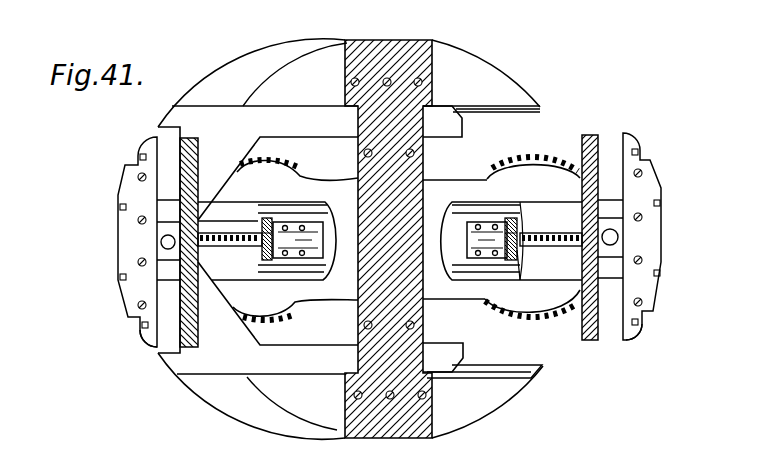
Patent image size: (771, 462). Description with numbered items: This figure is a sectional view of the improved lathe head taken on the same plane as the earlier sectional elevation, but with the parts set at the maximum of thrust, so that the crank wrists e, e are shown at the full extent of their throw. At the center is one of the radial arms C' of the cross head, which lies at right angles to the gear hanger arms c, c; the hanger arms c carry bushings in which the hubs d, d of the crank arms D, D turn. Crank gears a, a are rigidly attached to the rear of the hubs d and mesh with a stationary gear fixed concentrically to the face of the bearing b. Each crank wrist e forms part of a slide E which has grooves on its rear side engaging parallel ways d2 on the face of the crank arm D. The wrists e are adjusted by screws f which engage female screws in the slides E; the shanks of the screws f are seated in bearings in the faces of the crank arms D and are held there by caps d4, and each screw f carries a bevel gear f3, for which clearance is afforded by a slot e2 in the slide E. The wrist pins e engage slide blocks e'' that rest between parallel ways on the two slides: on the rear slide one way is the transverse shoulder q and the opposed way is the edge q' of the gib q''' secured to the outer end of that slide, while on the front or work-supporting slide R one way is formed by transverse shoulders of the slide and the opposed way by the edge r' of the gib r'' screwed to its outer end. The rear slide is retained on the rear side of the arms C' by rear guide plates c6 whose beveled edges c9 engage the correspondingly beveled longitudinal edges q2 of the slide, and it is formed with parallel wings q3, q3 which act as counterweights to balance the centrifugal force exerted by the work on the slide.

The arm of the cross head C' is at (388, 239).
The parallel wings q3 is at (252, 239).
The rear guide plates c6 is at (487, 239).
The beveled edges of rear guide plates c9 is at (482, 242).
The transverse shoulder q is at (258, 240).
The beveled longitudinal edges q2 is at (179, 242).
The gib q''' is at (124, 242).
The edge of the gib q' is at (135, 354).
The crank wrist e is at (377, 254).
The slide block e'' is at (358, 246).
The front slide R is at (593, 225).
The gib r'' is at (643, 223).
The edge of the gib r' is at (624, 348).
The hub of crank arm d is at (455, 143).
The bearing b is at (454, 283).
The crank gear a is at (408, 162).
The gear hanger arm c is at (406, 248).
The crank arm D is at (390, 231).
The parallel ways d2 is at (320, 270).
The cap d4 is at (390, 240).
The slot e2 is at (247, 217).
The adjusting screw f is at (236, 247).
The slide E is at (367, 244).
The bevel gear f3 is at (265, 232).